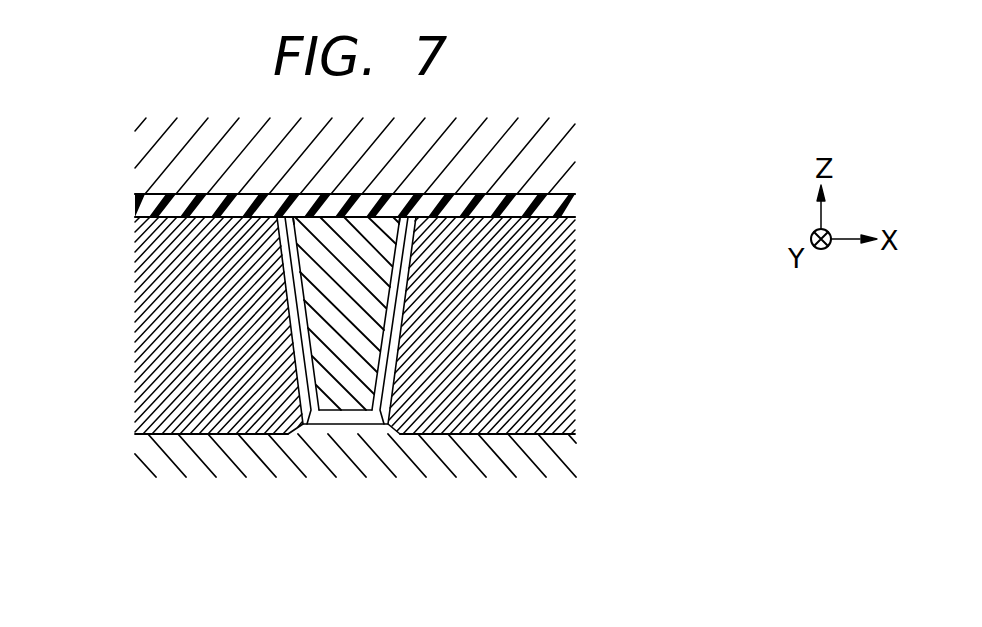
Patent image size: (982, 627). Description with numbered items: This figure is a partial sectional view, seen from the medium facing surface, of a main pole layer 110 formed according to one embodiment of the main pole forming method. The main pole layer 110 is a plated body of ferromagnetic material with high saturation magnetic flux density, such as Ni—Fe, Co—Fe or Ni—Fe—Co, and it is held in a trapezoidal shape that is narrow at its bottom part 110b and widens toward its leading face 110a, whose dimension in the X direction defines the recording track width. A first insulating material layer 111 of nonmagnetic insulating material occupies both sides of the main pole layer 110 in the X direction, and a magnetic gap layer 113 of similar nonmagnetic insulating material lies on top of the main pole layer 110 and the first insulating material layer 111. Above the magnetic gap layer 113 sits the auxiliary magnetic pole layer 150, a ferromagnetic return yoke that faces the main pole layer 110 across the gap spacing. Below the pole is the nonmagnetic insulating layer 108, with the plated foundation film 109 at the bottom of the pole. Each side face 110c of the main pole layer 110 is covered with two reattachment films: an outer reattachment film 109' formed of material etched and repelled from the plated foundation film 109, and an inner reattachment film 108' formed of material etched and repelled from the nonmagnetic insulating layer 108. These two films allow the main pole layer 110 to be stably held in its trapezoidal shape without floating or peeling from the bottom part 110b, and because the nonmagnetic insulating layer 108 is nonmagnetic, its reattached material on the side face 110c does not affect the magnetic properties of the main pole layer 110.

The auxiliary magnetic pole layer 150 is at (548, 137).
The magnetic gap layer 113 is at (548, 203).
The first insulating material layer 111 is at (553, 415).
The nonmagnetic insulating layer 108 is at (402, 455).
The plated foundation film 109 is at (344, 476).
The reattachment film 109' is at (347, 320).
The reattachment film 108' is at (347, 320).
The main pole layer 110 is at (365, 257).
The leading face 110a is at (346, 220).
The bottom part 110b is at (354, 387).
The side face 110c is at (400, 283).